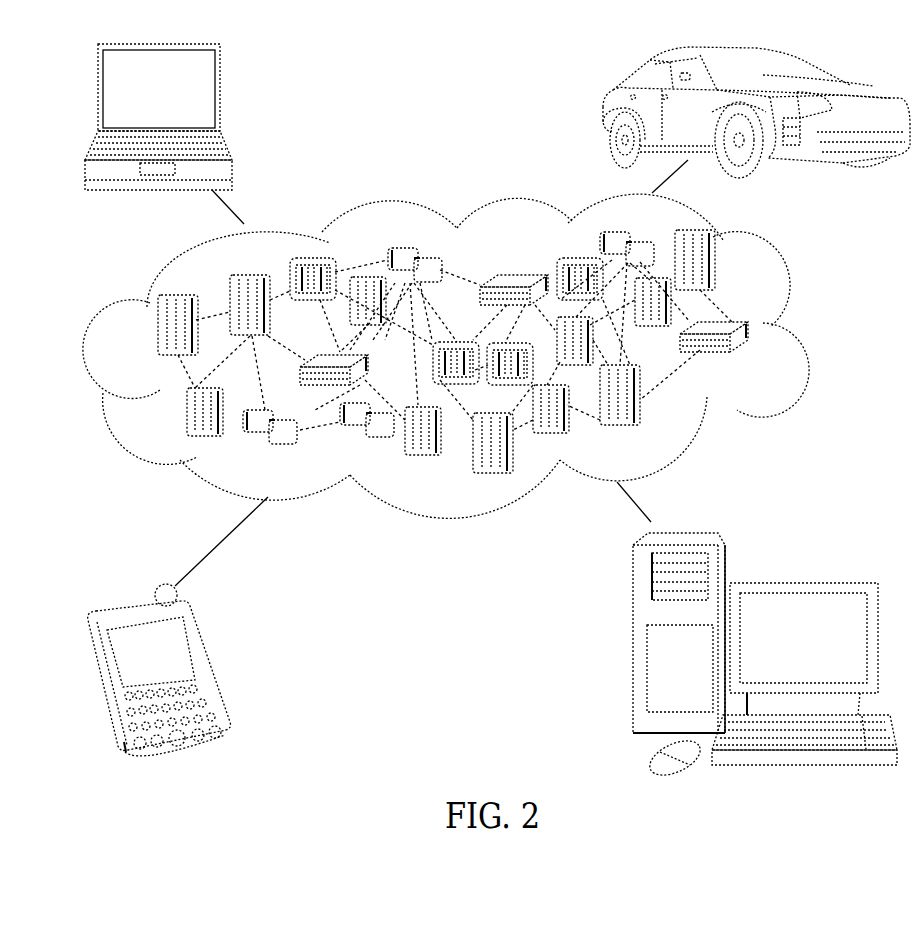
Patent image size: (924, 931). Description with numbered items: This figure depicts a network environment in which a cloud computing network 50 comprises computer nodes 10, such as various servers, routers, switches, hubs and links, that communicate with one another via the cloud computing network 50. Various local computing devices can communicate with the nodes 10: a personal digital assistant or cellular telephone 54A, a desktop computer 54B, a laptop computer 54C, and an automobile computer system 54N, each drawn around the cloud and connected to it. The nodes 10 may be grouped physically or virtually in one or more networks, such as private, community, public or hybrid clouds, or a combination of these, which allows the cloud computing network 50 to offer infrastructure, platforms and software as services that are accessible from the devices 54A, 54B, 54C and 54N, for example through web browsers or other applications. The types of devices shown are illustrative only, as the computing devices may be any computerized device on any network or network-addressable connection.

The laptop computer 54C is at (218, 98).
The automobile computer system 54N is at (610, 113).
The personal digital assistant (PDA) or cellular telephone 54A is at (212, 667).
The desktop computer 54B is at (800, 583).
The cloud computing network 50 is at (805, 332).
The computer nodes 10 is at (750, 360).